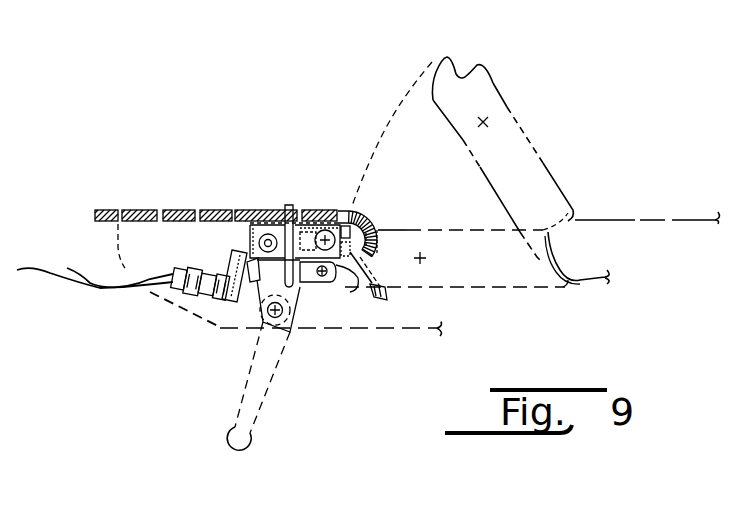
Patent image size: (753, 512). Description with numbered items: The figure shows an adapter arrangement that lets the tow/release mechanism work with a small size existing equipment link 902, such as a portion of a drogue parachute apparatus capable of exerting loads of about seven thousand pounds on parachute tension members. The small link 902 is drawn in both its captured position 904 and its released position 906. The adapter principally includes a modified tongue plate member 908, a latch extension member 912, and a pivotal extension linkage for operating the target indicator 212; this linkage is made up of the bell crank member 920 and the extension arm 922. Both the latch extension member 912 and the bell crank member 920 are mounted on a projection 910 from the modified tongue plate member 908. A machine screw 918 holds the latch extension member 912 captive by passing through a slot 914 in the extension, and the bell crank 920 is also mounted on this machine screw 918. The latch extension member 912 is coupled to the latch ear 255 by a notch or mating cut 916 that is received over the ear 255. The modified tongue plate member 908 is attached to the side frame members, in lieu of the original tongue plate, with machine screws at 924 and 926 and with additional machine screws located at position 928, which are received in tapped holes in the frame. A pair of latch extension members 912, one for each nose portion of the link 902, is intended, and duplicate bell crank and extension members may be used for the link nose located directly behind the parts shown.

The target indicator 212 is at (232, 292).
The latch ear 255 is at (290, 217).
The small size link 902 is at (479, 287).
The captured position 904 is at (482, 219).
The released position 906 is at (572, 133).
The modified tongue plate member 908 is at (280, 218).
The projection 910 is at (293, 220).
The latch extension member 912 is at (250, 233).
The slot 914 is at (365, 233).
The notch or mating cut 916 is at (295, 221).
The machine screw 918 is at (350, 226).
The bell crank member 920 is at (343, 265).
The extension arm 922 is at (307, 270).
The machine screw 924 is at (140, 210).
The machine screw 926 is at (213, 210).
The additional machine screw position 928 is at (338, 212).